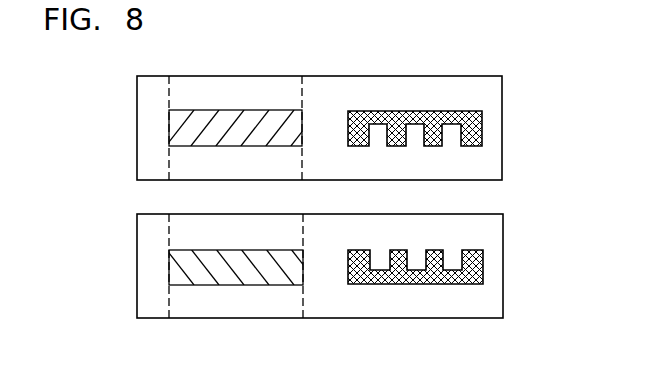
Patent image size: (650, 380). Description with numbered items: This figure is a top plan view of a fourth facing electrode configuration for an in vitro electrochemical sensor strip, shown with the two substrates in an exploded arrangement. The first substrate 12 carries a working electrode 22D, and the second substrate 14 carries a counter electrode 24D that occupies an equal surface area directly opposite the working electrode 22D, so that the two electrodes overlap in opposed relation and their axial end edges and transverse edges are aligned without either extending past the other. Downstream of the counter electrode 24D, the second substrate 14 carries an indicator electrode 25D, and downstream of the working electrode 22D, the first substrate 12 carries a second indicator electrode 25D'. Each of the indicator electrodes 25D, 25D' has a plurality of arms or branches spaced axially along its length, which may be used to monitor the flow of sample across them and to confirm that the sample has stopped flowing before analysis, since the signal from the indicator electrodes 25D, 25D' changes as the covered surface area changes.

The second substrate 14 is at (316, 109).
The first substrate 12 is at (308, 283).
The counter electrode 24D is at (248, 110).
The working electrode 22D is at (250, 285).
The indicator electrode 25D is at (433, 92).
The indicator electrode 25D' is at (415, 310).